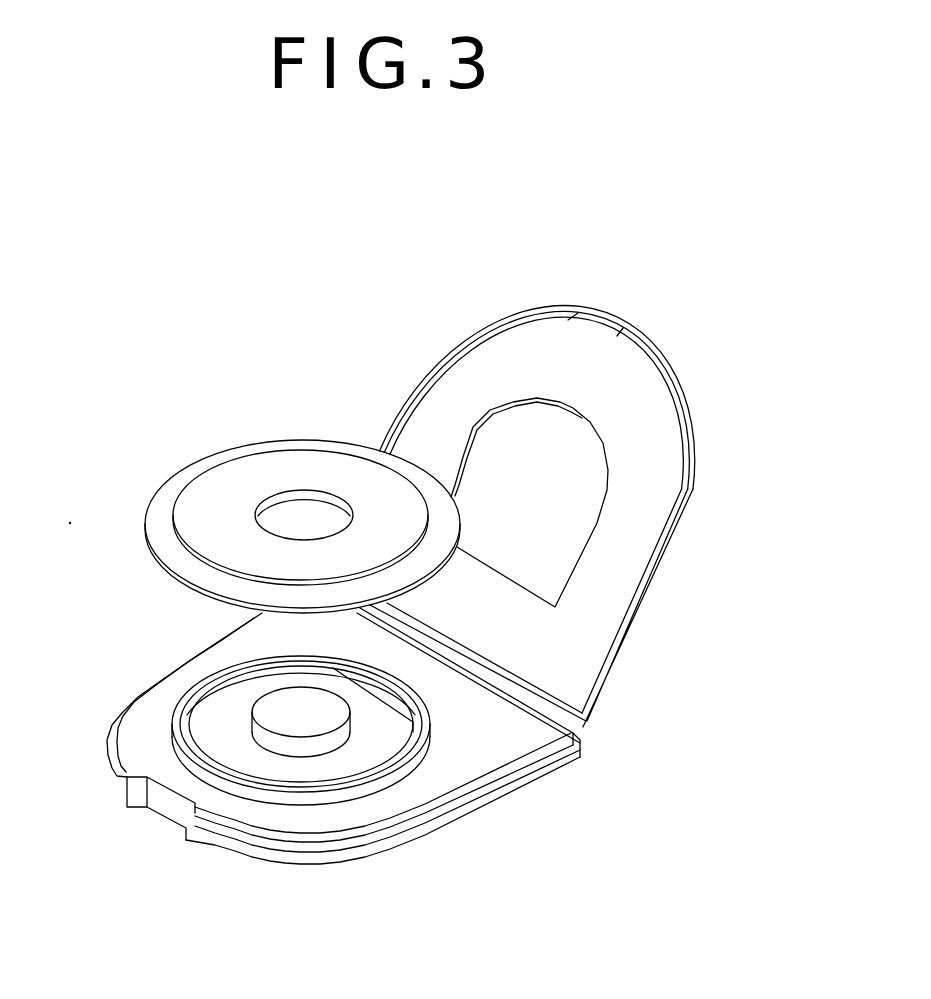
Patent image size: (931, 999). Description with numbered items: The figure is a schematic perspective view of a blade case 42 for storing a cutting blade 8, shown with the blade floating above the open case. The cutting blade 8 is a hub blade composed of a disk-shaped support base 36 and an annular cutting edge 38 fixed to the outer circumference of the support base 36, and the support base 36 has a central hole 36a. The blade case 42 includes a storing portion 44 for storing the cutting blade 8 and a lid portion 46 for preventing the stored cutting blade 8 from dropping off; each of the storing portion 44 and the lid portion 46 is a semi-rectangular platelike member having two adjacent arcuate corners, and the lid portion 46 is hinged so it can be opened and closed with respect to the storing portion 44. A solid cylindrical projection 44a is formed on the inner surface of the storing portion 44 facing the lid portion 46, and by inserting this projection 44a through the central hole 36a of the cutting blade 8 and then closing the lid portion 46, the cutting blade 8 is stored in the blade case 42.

The cutting blade 8 is at (208, 408).
The support base 36 is at (208, 488).
The central hole 36a is at (312, 497).
The cutting edge 38 is at (165, 505).
The blade case 42 is at (700, 702).
The storing portion 44 is at (545, 765).
The projection 44a is at (277, 710).
The lid portion 46 is at (608, 695).